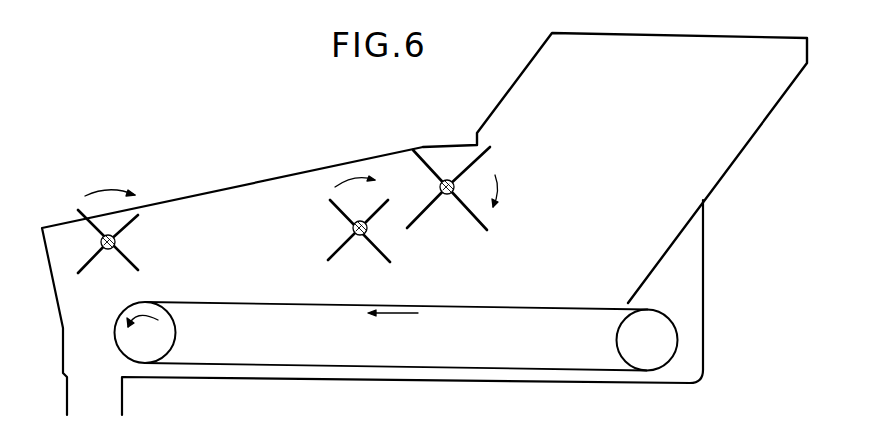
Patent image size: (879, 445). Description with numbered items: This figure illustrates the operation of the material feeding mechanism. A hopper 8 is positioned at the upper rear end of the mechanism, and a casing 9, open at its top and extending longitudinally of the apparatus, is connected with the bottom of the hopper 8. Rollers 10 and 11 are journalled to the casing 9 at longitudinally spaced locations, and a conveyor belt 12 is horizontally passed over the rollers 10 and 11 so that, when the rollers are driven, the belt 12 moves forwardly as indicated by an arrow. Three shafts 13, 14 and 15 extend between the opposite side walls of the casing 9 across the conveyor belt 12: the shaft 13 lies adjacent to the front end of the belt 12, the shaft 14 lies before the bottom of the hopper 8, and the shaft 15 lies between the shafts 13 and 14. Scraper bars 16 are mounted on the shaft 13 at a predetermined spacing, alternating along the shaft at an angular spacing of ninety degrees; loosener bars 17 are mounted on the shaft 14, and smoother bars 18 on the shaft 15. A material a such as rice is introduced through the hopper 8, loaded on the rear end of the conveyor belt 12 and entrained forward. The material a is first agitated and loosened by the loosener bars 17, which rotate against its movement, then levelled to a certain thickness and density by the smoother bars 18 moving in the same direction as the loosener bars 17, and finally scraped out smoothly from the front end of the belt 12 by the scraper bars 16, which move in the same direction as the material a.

The hopper 8 is at (667, 43).
The casing 9 is at (257, 182).
The roller 10 is at (168, 342).
The roller 11 is at (625, 340).
The conveyor belt 12 is at (355, 367).
The shaft 13 is at (105, 231).
The shaft 14 is at (445, 188).
The shaft 15 is at (351, 219).
The scraper bars 16 is at (90, 258).
The loosener bars 17 is at (425, 207).
The smoother bars 18 is at (362, 208).
The material a is at (230, 267).